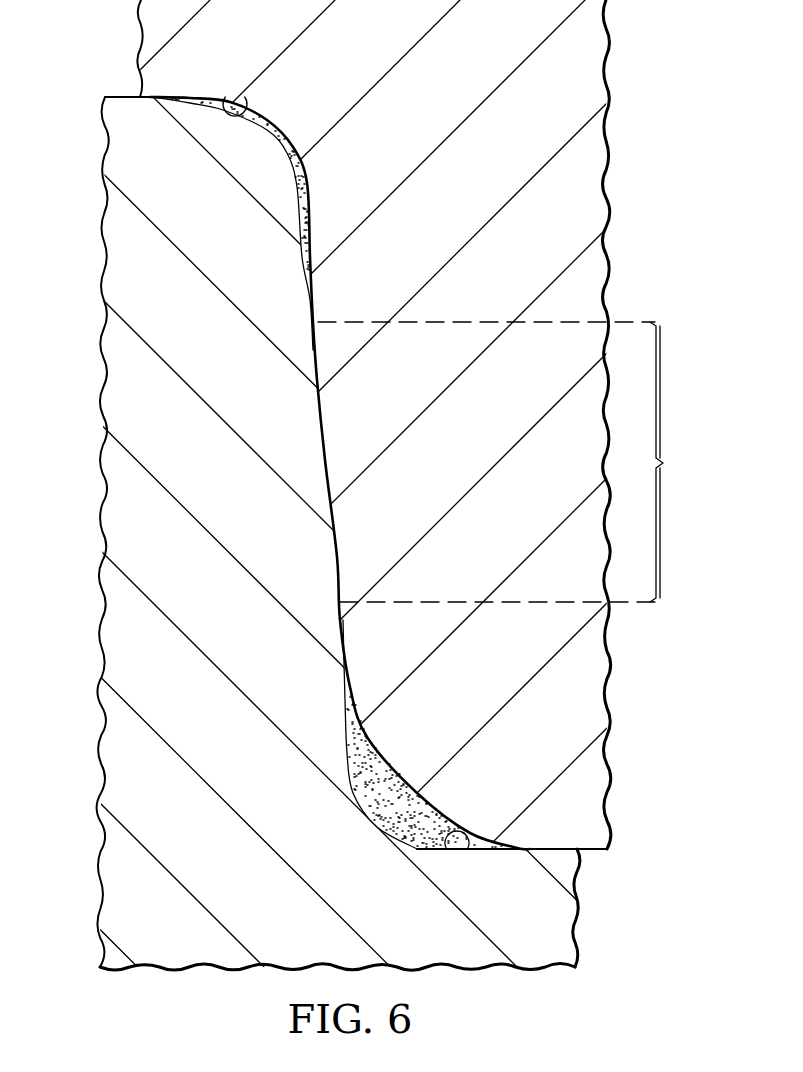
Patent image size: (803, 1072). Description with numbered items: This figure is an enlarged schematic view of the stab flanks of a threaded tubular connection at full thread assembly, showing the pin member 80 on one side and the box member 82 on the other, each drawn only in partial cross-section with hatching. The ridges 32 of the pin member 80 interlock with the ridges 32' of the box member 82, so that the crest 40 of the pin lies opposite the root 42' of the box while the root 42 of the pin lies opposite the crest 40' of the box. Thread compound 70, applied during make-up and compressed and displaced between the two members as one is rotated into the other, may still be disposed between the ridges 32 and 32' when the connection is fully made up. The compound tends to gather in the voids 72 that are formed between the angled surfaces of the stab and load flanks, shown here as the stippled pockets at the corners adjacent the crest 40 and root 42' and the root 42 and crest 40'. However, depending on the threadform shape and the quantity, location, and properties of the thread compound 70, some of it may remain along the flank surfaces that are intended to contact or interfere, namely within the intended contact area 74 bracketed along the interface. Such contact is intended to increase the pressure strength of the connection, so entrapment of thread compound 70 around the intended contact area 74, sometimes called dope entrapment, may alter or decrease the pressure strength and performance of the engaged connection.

The ridges of the pin 32 is at (401, 536).
The ridges of the box 32' is at (401, 536).
The crest of the pin 40 is at (122, 66).
The crest of the box 40' is at (521, 878).
The root of the pin 42 is at (457, 873).
The root of the box 42' is at (237, 74).
The thread compound 70 is at (304, 163).
The voids 72 is at (280, 137).
The intended contact area 74 is at (511, 462).
The pin member 80 is at (113, 758).
The box member 82 is at (597, 60).